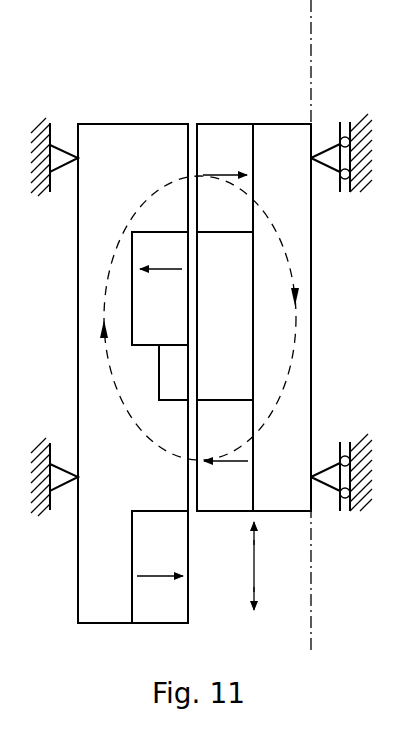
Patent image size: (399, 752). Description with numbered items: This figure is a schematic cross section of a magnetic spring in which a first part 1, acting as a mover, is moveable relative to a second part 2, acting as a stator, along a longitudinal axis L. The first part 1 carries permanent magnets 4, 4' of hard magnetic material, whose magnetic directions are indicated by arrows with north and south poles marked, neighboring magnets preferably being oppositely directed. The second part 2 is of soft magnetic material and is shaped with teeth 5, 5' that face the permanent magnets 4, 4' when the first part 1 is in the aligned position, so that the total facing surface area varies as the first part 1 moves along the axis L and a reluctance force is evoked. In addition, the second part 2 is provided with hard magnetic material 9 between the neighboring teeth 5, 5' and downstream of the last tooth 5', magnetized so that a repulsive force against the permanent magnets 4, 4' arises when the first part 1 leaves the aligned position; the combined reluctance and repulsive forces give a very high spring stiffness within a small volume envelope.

The first part 1 is at (268, 107).
The second part 2 is at (120, 107).
The permanent magnet 4 is at (225, 132).
The permanent magnet 4' is at (225, 455).
The tooth 5 is at (172, 328).
The tooth 5' is at (173, 390).
The hard magnetic material 9 is at (155, 332).
The longitudinal axis L is at (311, 592).